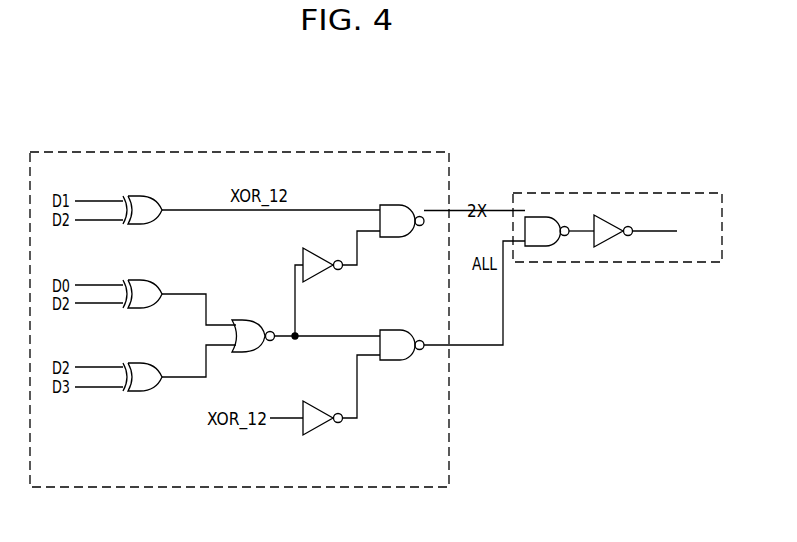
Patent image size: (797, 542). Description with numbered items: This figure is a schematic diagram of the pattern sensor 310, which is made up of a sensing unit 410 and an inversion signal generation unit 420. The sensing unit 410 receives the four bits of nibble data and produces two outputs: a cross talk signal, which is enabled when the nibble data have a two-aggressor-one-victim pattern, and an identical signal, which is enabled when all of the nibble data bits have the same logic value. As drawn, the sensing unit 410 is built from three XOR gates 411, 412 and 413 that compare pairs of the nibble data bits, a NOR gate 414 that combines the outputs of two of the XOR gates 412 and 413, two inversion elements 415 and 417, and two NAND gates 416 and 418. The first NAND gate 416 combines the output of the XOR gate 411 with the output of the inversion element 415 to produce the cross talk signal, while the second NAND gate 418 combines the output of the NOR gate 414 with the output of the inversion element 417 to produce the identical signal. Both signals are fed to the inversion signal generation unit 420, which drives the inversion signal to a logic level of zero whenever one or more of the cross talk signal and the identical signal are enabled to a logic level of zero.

The pattern sensor 310 is at (682, 175).
The sensing unit 410 is at (400, 152).
The XOR gate 411 is at (148, 196).
The XOR gate 412 is at (148, 280).
The XOR gate 413 is at (148, 363).
The NOR gate 414 is at (240, 319).
The inversion element 415 is at (318, 274).
The NAND gate 416 is at (398, 205).
The inversion element 417 is at (318, 427).
The NAND gate 418 is at (398, 330).
The inversion signal generation unit 420 is at (722, 236).